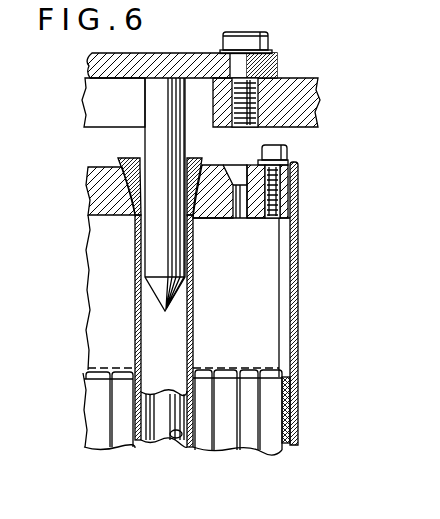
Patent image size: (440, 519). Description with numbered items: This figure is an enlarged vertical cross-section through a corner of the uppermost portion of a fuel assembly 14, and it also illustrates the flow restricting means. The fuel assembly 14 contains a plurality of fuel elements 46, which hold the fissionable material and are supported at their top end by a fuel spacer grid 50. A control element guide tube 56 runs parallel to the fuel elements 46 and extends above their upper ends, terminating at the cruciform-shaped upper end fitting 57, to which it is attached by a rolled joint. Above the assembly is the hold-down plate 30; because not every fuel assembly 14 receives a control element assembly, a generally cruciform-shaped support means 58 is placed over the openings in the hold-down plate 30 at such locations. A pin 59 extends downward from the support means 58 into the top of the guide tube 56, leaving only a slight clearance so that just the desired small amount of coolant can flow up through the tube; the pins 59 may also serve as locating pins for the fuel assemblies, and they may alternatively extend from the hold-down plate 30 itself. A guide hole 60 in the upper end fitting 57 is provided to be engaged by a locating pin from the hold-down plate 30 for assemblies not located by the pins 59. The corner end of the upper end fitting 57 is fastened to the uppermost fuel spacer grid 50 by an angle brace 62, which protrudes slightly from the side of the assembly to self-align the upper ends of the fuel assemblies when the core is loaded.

The fuel assembly 14 is at (214, 88).
The hold-down plate 30 is at (308, 78).
The fuel elements 46 is at (267, 399).
The fuel spacer grid 50 is at (300, 415).
The control element guide tube 56 is at (135, 297).
The upper end fitting 57 is at (100, 193).
The support means 58 is at (84, 64).
The pins 59 is at (155, 141).
The guide holes 60 is at (243, 205).
The angle braces 62 is at (291, 292).